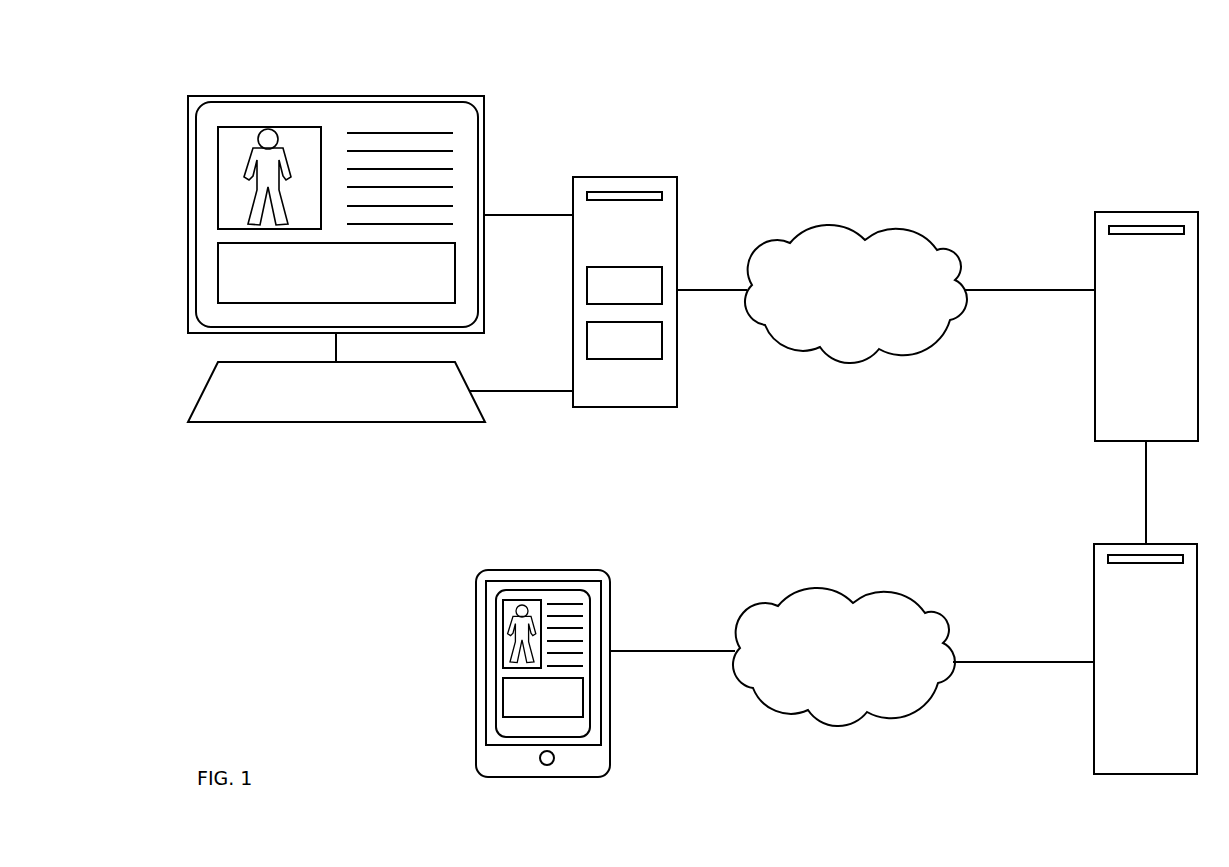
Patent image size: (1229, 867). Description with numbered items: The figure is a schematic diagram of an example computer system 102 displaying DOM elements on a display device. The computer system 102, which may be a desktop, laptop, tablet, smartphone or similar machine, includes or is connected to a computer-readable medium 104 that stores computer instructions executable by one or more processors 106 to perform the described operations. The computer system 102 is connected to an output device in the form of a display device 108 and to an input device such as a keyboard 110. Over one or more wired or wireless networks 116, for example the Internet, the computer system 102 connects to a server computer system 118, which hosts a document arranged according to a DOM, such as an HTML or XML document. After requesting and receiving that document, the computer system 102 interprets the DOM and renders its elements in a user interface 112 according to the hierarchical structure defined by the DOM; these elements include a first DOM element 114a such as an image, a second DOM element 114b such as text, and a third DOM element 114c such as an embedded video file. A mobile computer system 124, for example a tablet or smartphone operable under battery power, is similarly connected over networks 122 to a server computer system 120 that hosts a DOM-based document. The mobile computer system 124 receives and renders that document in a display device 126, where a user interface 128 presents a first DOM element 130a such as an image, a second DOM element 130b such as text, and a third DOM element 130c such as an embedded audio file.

The computer system 102 is at (631, 177).
The computer-readable medium 104 is at (609, 295).
The processors 106 is at (609, 350).
The display device 108 is at (430, 94).
The keyboard 110 is at (321, 401).
The user interface 112 is at (478, 122).
The first DOM element 114a is at (217, 148).
The second DOM element 114b is at (383, 133).
The third DOM element 114c is at (316, 284).
The networks 116 is at (837, 306).
The server computer system 118 is at (1130, 372).
The server computer system 120 is at (1130, 694).
The networks 122 is at (826, 669).
The mobile computer system 124 is at (572, 569).
The display device 126 is at (595, 616).
The user interface 128 is at (496, 702).
The first DOM element 130a is at (503, 613).
The second DOM element 130b is at (558, 604).
The third DOM element 130c is at (522, 707).